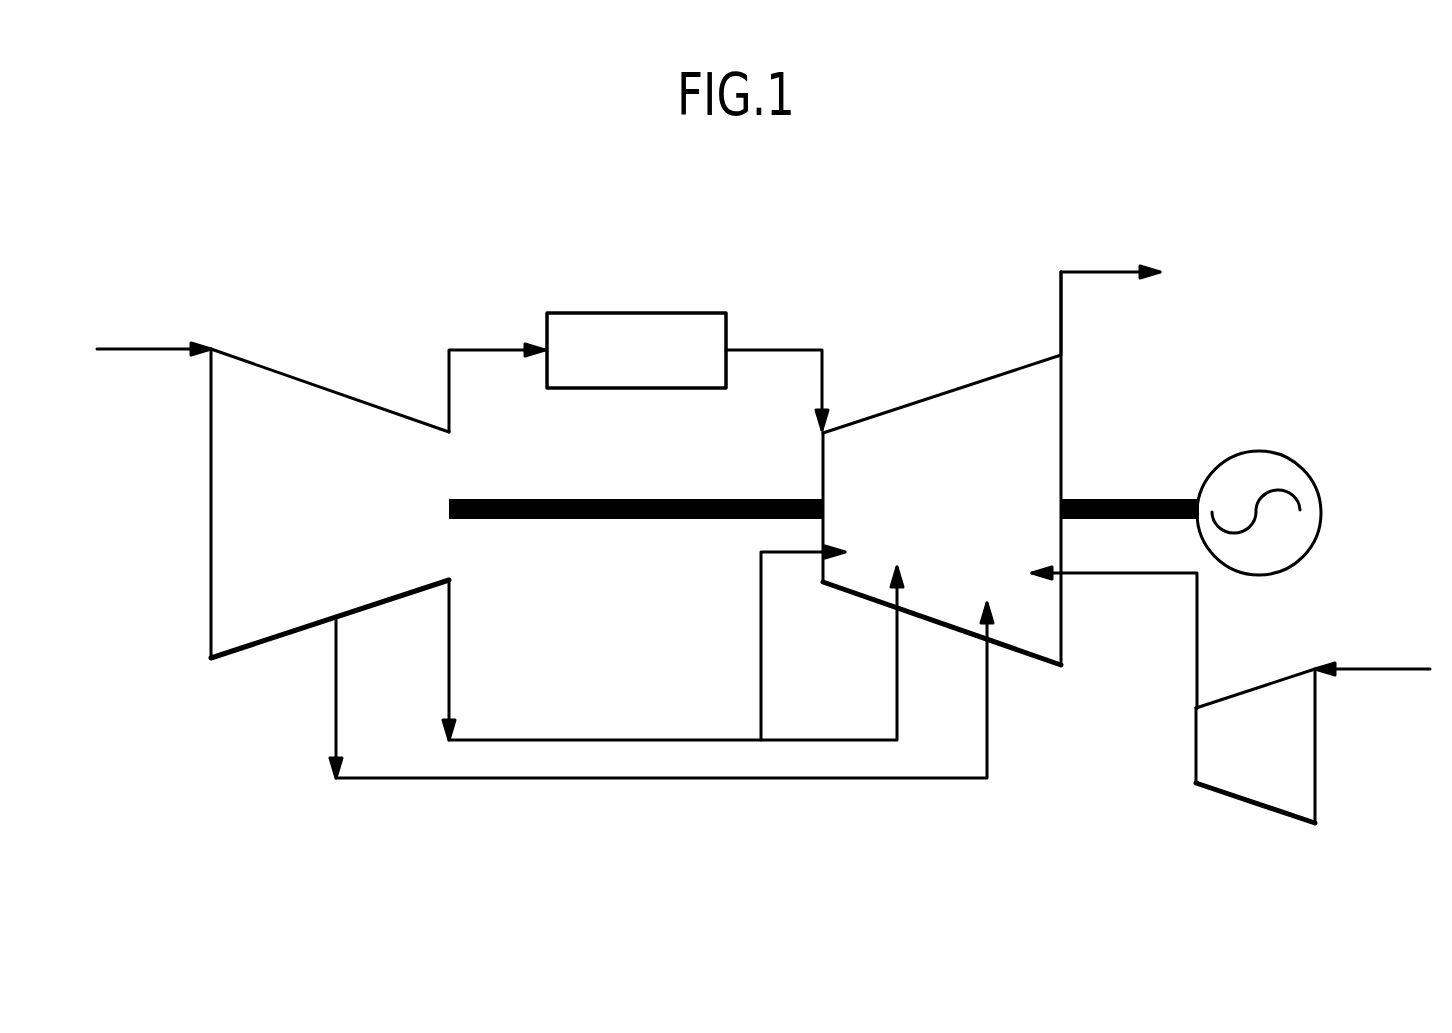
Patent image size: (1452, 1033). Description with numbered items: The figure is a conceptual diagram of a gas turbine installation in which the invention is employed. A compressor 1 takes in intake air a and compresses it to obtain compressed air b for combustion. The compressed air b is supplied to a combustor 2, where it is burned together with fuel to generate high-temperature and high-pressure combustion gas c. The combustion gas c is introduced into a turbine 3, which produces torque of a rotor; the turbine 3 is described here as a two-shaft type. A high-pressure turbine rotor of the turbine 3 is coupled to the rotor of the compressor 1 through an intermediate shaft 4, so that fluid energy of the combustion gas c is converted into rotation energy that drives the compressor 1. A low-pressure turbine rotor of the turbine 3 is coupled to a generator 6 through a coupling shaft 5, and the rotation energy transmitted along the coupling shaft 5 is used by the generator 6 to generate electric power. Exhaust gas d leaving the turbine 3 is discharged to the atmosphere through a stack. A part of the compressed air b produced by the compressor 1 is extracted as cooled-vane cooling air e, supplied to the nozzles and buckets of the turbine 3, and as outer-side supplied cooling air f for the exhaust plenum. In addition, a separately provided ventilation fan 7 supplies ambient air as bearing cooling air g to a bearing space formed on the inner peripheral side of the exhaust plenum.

The compressor 1 is at (312, 522).
The combustor 2 is at (626, 369).
The turbine 3 is at (936, 526).
The intermediate shaft 4 is at (637, 521).
The coupling shaft 5 is at (1134, 498).
The generator 6 is at (1257, 449).
The ventilation fan 7 is at (1247, 762).
The intake air a is at (141, 347).
The compressed air b is at (495, 347).
The combustion gas c is at (771, 349).
The exhaust gas d is at (1098, 270).
The cooled-vane cooling air e is at (568, 739).
The outer-side supplied cooling air f is at (658, 782).
The bearing cooling air g is at (1125, 576).